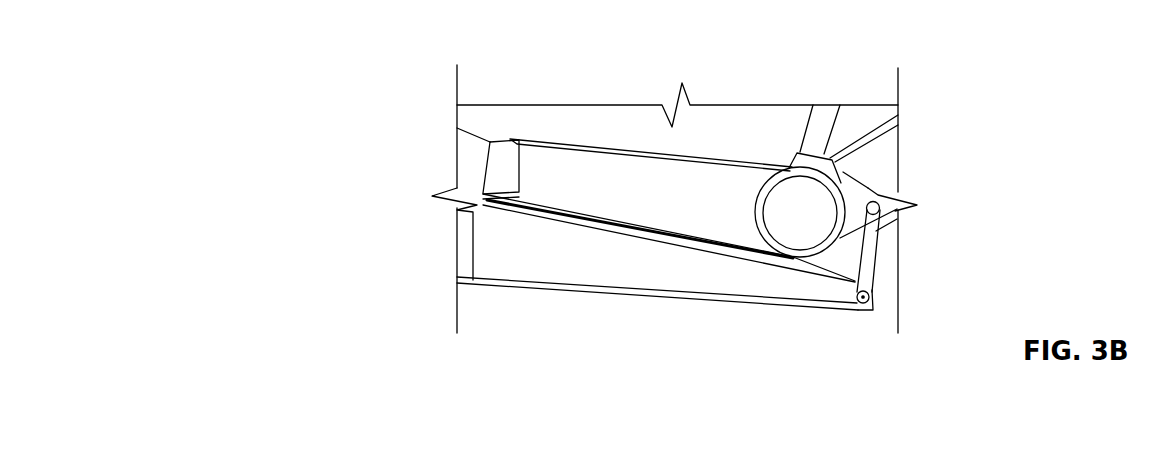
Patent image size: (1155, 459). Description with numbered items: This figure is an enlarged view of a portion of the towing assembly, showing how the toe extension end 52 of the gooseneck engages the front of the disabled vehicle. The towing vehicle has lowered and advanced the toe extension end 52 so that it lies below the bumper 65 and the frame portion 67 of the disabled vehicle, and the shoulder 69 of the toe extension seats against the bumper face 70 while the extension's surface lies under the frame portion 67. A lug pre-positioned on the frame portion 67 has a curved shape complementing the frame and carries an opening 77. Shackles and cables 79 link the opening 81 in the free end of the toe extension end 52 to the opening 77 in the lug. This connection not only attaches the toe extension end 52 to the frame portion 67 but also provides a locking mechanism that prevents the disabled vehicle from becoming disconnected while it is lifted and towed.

The toe extension end 52 is at (550, 265).
The bumper 65 is at (508, 173).
The frame portion 67 is at (787, 182).
The shoulder 69 is at (468, 147).
The bumper face 70 is at (490, 163).
The opening 77 is at (868, 186).
The shackles and cables 79 is at (872, 247).
The opening 81 is at (859, 305).